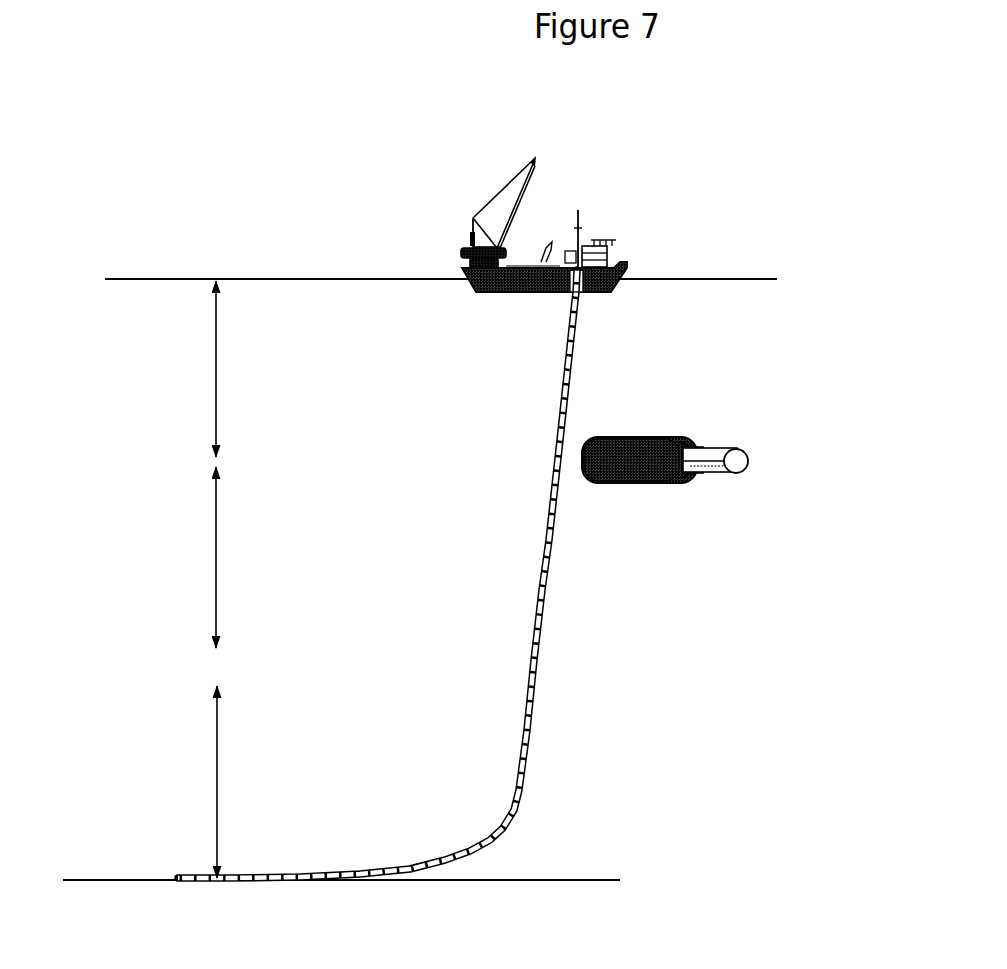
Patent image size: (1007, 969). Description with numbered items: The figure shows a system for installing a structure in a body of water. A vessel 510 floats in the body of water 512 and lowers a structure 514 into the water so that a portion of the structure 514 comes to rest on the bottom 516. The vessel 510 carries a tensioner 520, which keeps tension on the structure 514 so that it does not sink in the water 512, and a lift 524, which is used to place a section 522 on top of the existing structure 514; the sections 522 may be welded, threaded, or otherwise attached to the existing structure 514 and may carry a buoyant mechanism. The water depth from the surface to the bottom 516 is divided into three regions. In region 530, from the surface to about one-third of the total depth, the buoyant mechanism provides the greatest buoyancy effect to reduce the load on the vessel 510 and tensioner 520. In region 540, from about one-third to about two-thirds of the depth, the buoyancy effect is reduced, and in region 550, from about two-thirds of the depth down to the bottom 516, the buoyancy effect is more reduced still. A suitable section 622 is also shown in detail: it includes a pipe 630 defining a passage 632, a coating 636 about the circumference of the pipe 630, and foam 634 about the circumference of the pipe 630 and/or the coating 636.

The vessel 510 is at (624, 267).
The body of water 512 is at (710, 276).
The structure 514 is at (579, 332).
The bottom 516 is at (122, 879).
The tensioner 520 is at (588, 262).
The section 522 is at (550, 562).
The lift 524 is at (475, 218).
The region 530 is at (183, 369).
The region 540 is at (183, 557).
The region 550 is at (191, 782).
The section 622 is at (691, 494).
The pipe 630 is at (750, 445).
The passage 632 is at (742, 463).
The foam 634 is at (650, 431).
The coating 636 is at (714, 441).